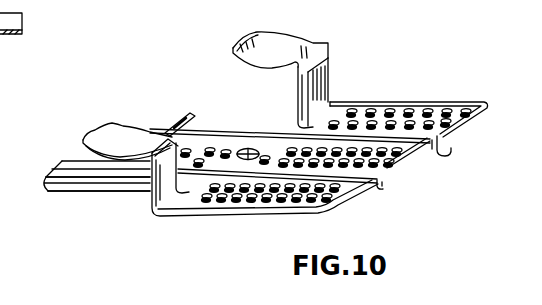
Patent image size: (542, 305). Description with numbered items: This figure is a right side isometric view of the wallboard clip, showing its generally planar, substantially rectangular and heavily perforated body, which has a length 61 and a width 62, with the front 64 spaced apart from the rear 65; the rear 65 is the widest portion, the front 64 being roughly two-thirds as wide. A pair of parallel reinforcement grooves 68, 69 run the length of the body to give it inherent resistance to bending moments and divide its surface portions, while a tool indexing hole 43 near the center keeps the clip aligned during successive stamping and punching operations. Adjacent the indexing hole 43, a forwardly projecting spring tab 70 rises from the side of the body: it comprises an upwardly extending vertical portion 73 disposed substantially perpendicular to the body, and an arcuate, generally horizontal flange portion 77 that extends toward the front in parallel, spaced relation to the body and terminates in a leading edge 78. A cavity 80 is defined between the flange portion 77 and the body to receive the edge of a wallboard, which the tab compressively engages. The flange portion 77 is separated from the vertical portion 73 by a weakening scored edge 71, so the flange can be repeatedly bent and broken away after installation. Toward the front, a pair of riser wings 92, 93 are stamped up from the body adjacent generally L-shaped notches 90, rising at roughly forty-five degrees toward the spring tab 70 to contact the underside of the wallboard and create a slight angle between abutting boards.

The tool indexing hole 43 is at (258, 150).
The length 61 is at (315, 235).
The width 62 is at (502, 145).
The front 64 is at (42, 151).
The rear 65 is at (409, 223).
The reinforcement groove 68 is at (379, 188).
The reinforcement groove 69 is at (22, 33).
The spring tab 70 is at (245, 38).
The scored edge 71 is at (333, 61).
The vertical portion 73 is at (332, 103).
The flange portion 77 is at (280, 42).
The leading edge 78 is at (105, 128).
The cavity 80 is at (267, 83).
The L-shaped notch 90 is at (93, 178).
The riser wing 92 is at (98, 170).
The riser wing 93 is at (192, 112).